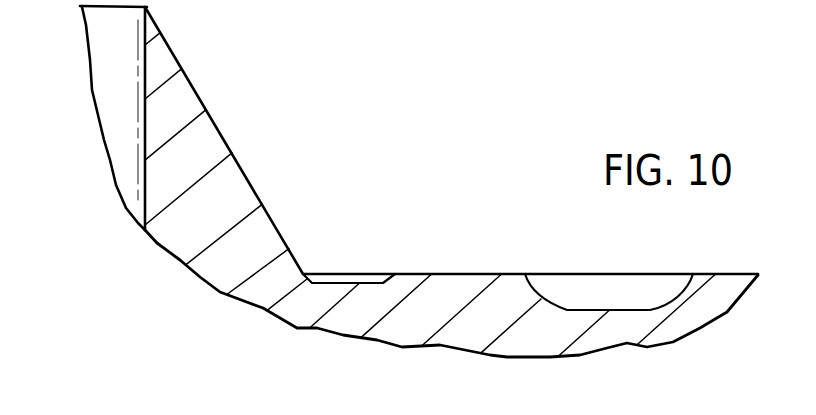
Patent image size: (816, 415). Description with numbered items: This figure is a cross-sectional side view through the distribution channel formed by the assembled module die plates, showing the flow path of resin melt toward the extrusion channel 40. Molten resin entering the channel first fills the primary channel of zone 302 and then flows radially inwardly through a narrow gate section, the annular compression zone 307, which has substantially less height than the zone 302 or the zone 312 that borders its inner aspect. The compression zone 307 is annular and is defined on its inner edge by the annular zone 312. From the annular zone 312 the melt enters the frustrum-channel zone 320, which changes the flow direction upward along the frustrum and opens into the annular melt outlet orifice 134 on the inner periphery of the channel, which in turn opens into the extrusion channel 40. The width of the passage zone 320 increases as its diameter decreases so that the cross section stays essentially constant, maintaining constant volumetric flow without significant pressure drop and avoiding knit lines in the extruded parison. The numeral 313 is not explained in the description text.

The extrusion channel 40 is at (110, 72).
The annular melt outlet orifice 134 is at (147, 8).
The frustrum-channel zone 320 is at (202, 107).
The annular compression zone 307 is at (462, 272).
The annular zone 312 is at (332, 270).
The primary channel zone 302 is at (593, 307).
The bottom surface 313 is at (451, 322).